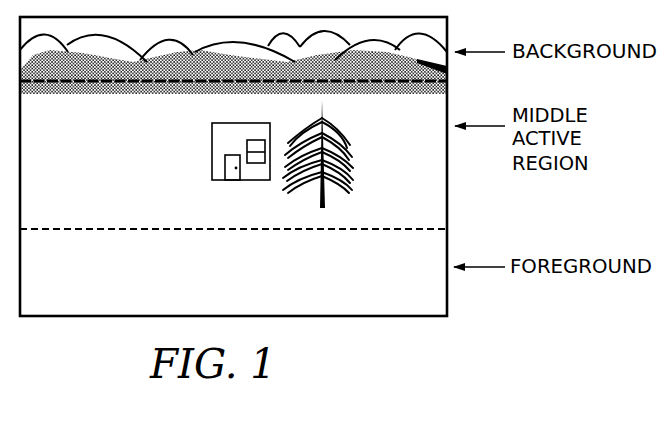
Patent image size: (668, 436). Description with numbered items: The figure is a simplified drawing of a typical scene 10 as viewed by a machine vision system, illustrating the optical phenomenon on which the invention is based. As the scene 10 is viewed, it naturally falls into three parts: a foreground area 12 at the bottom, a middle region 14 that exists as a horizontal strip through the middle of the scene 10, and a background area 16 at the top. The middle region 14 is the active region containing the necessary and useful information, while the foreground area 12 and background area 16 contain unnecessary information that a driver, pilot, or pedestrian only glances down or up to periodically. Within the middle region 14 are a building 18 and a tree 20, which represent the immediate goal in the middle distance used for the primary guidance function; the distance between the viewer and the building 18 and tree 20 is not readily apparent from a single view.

The scene 10 is at (482, 199).
The foreground area 12 is at (405, 292).
The middle region 14 is at (410, 188).
The background area 16 is at (447, 72).
The building 18 is at (222, 135).
The tree 20 is at (337, 140).